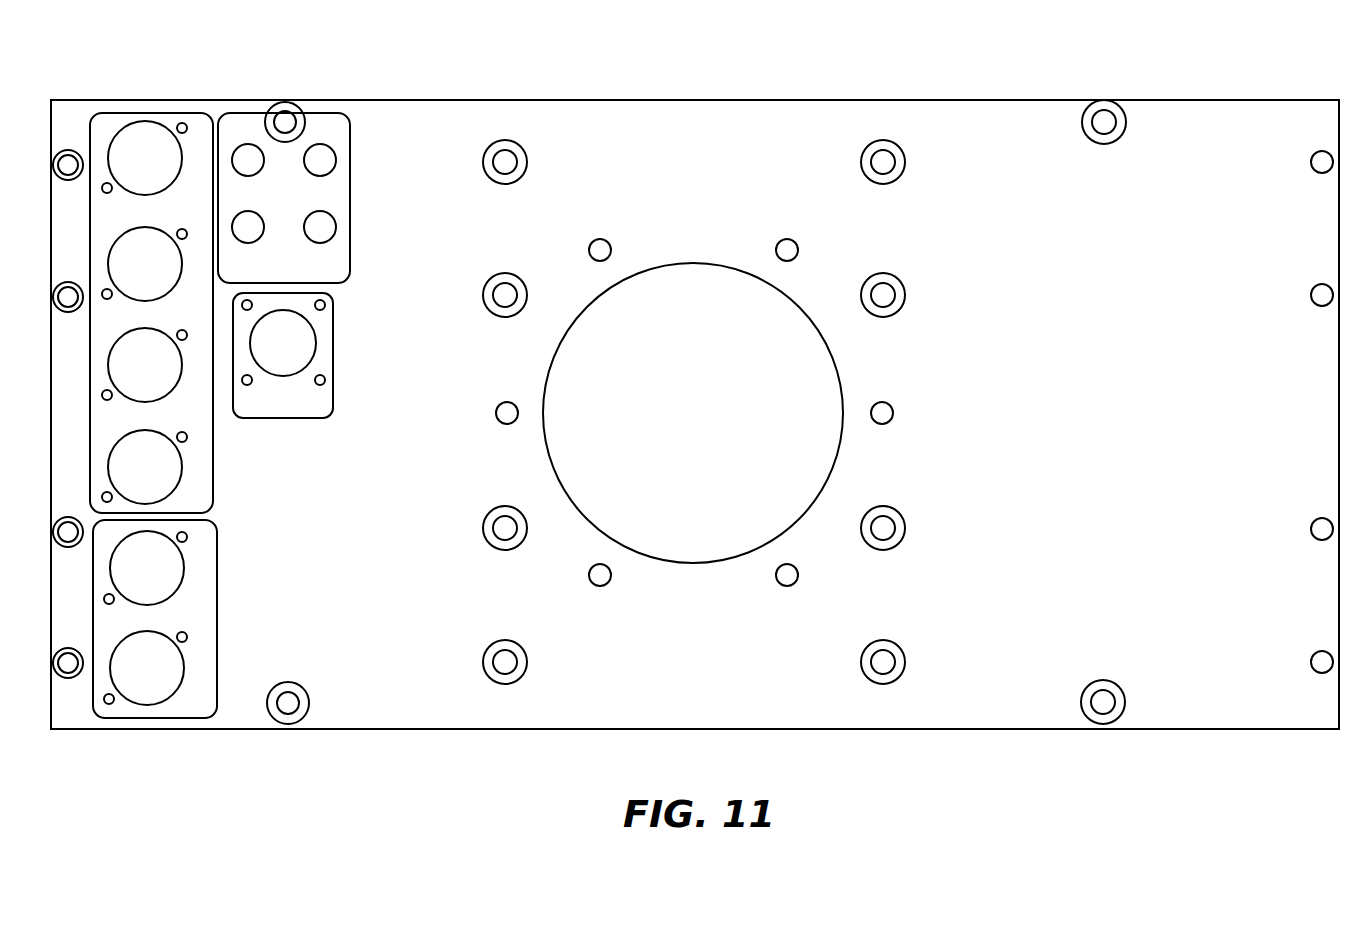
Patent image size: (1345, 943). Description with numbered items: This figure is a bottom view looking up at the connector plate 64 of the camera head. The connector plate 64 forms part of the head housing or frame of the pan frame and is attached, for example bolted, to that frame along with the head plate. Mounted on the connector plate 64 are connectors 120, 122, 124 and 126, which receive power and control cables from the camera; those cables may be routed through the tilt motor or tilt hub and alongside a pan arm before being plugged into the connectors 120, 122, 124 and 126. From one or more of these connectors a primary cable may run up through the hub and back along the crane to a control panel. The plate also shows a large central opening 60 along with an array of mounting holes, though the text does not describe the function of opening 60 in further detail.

The central opening 60 is at (782, 398).
The connector plate 64 is at (410, 733).
The connector 120 is at (147, 147).
The connector 122 is at (162, 567).
The connector 124 is at (318, 157).
The connector 126 is at (293, 343).